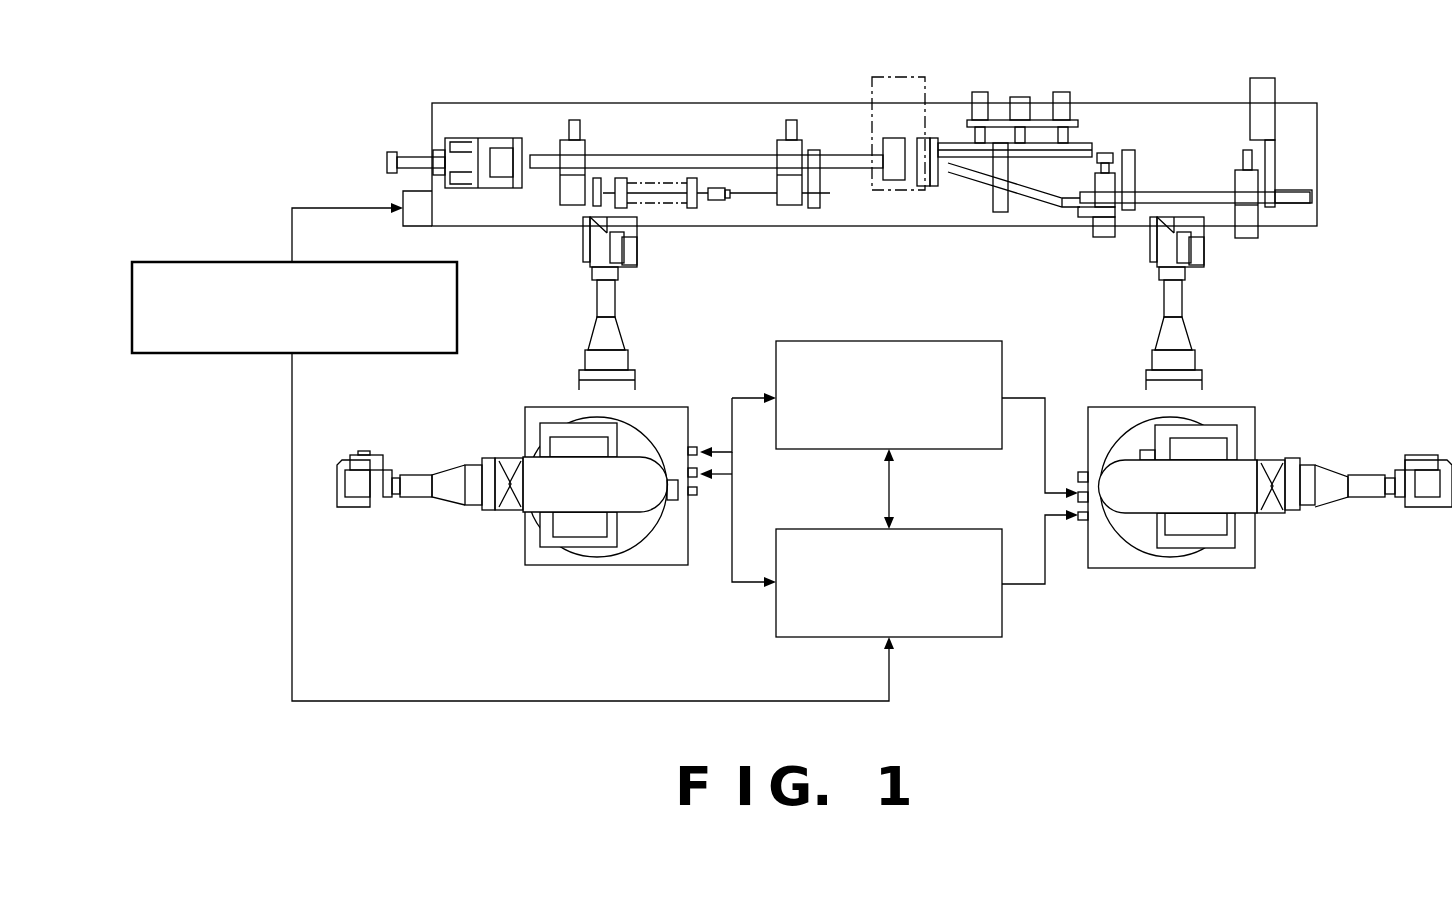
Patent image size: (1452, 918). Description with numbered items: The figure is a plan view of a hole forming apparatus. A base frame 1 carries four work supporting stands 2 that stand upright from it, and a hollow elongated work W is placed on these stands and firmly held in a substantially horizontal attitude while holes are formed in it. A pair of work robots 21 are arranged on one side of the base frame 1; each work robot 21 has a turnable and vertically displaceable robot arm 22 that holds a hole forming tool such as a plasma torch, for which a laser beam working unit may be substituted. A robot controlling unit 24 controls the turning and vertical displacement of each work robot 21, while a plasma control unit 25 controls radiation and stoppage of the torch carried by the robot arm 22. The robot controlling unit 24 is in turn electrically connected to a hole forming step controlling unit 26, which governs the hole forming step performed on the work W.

The base frame 1 is at (508, 103).
The work W is at (682, 158).
The work supporting stand 2 is at (567, 207).
The work robot 21 is at (468, 448).
The robot arm 22 is at (612, 337).
The robot controlling unit 24 is at (932, 637).
The plasma control unit 25 is at (925, 341).
The hole forming step controlling unit 26 is at (208, 353).